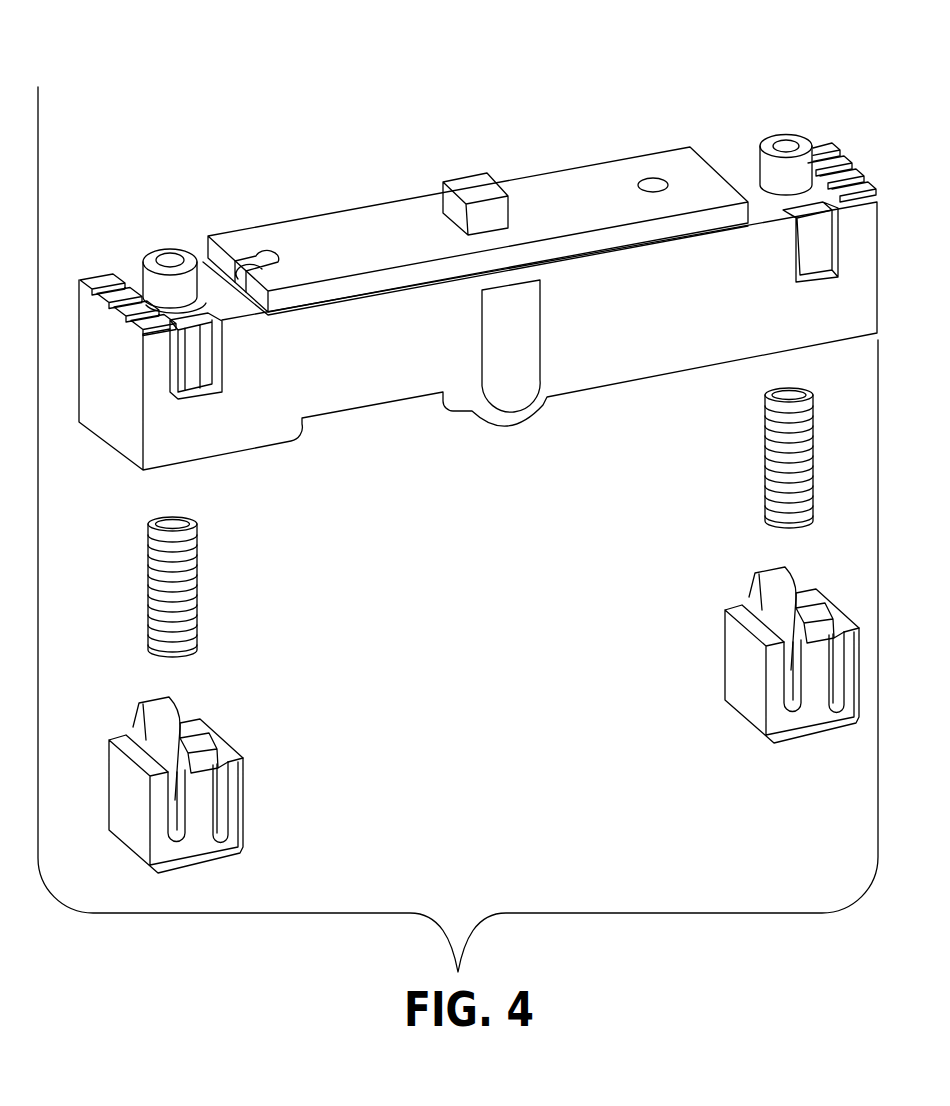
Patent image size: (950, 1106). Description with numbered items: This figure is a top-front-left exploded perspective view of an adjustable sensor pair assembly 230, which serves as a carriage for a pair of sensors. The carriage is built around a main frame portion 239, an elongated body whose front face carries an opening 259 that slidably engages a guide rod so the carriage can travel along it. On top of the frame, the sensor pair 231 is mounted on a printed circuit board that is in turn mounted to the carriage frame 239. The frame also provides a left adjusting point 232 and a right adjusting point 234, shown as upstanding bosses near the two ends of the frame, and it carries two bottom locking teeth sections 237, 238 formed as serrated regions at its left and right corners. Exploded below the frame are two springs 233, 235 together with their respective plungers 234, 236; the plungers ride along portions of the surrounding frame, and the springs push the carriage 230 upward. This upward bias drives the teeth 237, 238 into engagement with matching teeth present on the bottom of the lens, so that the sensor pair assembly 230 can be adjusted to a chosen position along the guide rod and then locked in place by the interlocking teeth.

The adjustable sensor pair assembly 230 is at (297, 112).
The sensor pair 231 is at (477, 182).
The left adjusting point 232 is at (177, 243).
The spring 233 is at (197, 548).
The right adjusting point 234 is at (763, 140).
The spring 235 is at (763, 438).
The plunger 236 is at (725, 662).
The bottom locking teeth section 237 is at (98, 273).
The bottom locking teeth section 238 is at (838, 160).
The main frame portion 239 is at (333, 380).
The opening 259 is at (513, 410).